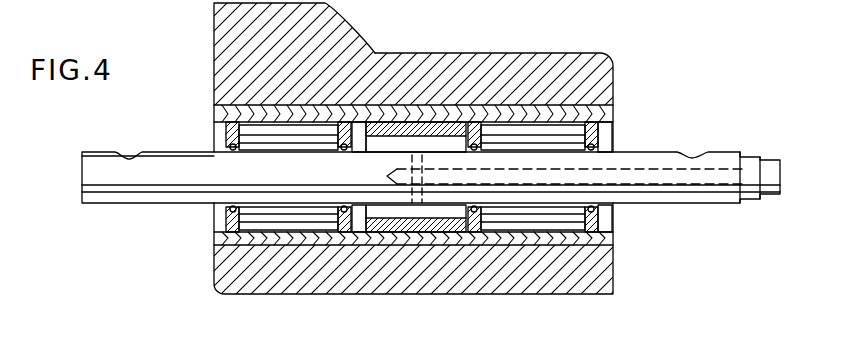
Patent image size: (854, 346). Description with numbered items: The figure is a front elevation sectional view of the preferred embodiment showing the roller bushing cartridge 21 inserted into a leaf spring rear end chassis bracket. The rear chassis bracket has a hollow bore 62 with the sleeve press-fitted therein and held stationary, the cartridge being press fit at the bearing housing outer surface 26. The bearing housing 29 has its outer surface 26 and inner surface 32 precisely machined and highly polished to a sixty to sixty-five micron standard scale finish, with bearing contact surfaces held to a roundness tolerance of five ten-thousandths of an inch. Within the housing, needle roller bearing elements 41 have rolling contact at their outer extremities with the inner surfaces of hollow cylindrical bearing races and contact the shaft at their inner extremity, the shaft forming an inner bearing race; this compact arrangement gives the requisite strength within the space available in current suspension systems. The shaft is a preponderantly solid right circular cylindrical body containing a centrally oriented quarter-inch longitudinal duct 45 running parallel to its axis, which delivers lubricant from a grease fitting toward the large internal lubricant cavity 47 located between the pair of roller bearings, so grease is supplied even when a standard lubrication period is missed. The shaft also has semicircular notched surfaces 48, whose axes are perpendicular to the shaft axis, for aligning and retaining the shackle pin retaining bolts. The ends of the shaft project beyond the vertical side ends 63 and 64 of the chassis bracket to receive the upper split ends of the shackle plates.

The roller bushing cartridge 21 is at (622, 138).
The bearing housing outer surface 26 is at (444, 108).
The bearing housing 29 is at (485, 106).
The bearing housing inner surface 32 is at (394, 120).
The needle roller bearing elements 41 is at (228, 141).
The longitudinal duct 45 is at (660, 204).
The lubricant cavity 47 is at (410, 210).
The semicircular notched surfaces 48 is at (131, 127).
The hollow bore 62 is at (230, 103).
The vertical side end 63 is at (616, 73).
The vertical side end 64 is at (214, 8).